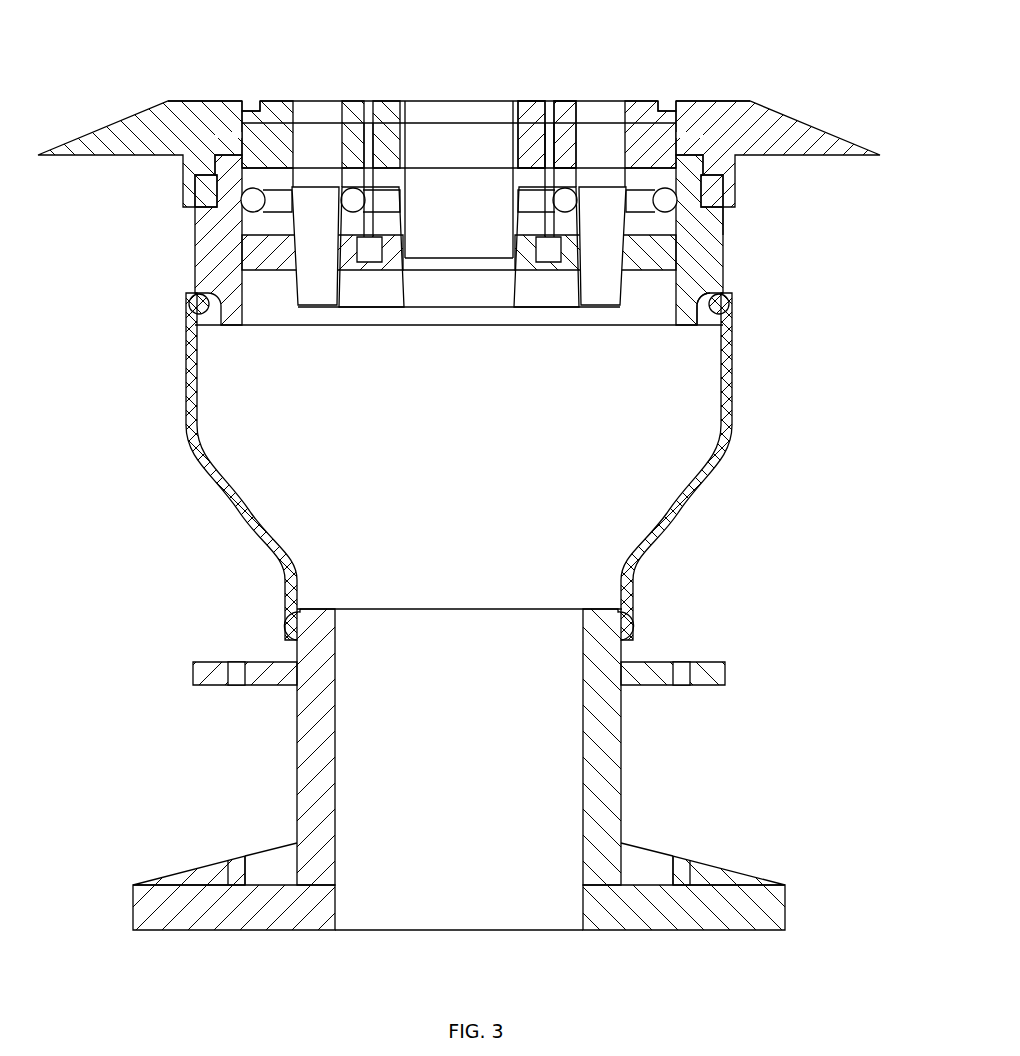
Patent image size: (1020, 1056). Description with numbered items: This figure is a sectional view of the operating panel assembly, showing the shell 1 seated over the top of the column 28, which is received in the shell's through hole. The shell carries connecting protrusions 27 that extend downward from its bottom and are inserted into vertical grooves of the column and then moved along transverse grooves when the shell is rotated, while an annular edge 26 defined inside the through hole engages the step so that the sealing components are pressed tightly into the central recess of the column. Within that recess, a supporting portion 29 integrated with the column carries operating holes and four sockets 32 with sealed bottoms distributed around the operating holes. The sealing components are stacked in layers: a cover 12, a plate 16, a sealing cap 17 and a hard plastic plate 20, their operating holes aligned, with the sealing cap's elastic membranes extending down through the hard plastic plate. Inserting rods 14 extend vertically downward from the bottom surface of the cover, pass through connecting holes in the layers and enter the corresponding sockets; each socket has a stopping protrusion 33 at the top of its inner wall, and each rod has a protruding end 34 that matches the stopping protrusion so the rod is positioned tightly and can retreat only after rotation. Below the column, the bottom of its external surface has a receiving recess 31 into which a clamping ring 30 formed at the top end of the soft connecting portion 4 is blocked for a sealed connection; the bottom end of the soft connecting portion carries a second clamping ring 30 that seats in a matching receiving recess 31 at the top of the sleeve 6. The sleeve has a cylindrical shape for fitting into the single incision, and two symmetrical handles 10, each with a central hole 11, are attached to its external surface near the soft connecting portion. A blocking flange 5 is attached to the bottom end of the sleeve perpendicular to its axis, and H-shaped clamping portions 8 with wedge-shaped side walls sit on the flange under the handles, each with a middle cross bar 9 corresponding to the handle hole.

The shell 1 is at (750, 128).
The soft connecting portion 4 is at (718, 470).
The blocking flange 5 is at (672, 915).
The sleeve 6 is at (605, 748).
The clamping portion 8 is at (715, 876).
The cross bar 9 is at (676, 865).
The handle 10 is at (715, 667).
The hole 11 is at (680, 658).
The cover 12 is at (373, 117).
The inserting rod 14 is at (365, 213).
The plate 16 is at (530, 140).
The sealing cap 17 is at (565, 177).
The hard plastic plate 20 is at (640, 199).
The annular edge 26 is at (655, 107).
The connecting protrusion 27 is at (712, 186).
The column 28 is at (708, 217).
The supporting portion 29 is at (646, 258).
The clamping ring 30 is at (716, 300).
The receiving recess 31 is at (700, 302).
The socket 32 is at (539, 240).
The stopping protrusion 33 is at (537, 254).
The protruding end 34 is at (380, 245).